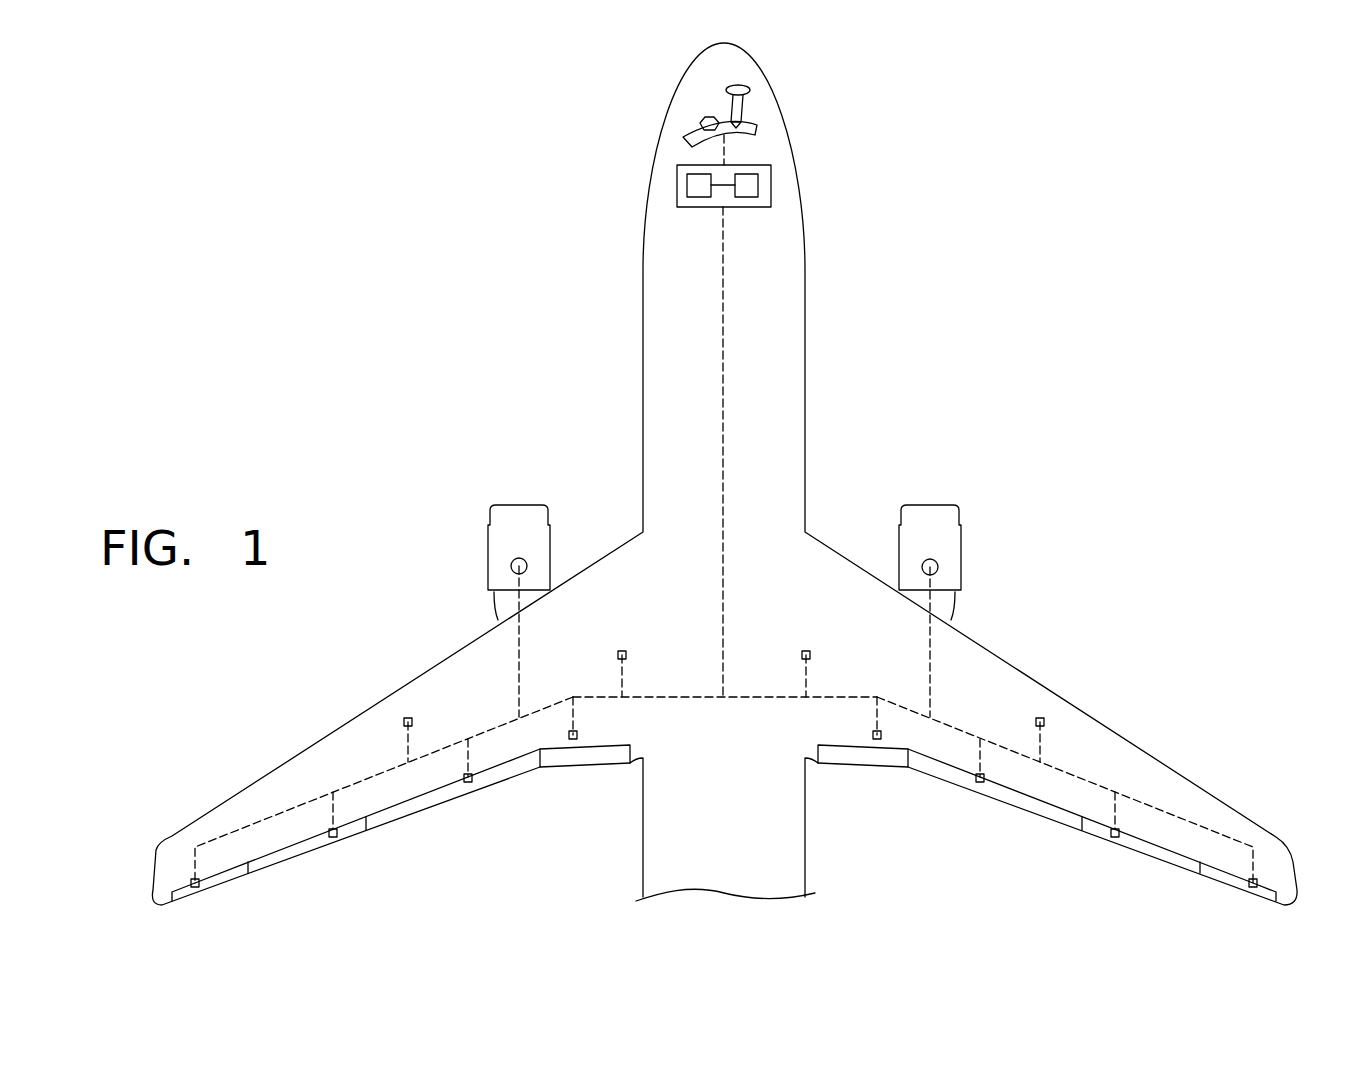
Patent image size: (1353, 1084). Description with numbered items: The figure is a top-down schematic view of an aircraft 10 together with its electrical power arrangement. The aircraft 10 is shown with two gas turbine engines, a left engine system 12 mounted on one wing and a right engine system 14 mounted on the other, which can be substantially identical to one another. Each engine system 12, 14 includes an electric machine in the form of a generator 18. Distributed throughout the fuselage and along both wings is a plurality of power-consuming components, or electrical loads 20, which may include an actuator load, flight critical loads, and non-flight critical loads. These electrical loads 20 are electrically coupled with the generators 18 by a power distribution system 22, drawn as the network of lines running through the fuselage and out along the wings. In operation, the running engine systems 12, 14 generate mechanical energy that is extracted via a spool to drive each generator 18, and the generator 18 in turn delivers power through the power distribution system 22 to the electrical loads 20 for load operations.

The aircraft 10 is at (541, 109).
The left engine system 12 is at (518, 517).
The right engine system 14 is at (942, 517).
The generator 18 is at (532, 560).
The electrical loads 20 is at (690, 199).
The power distribution system 22 is at (715, 379).